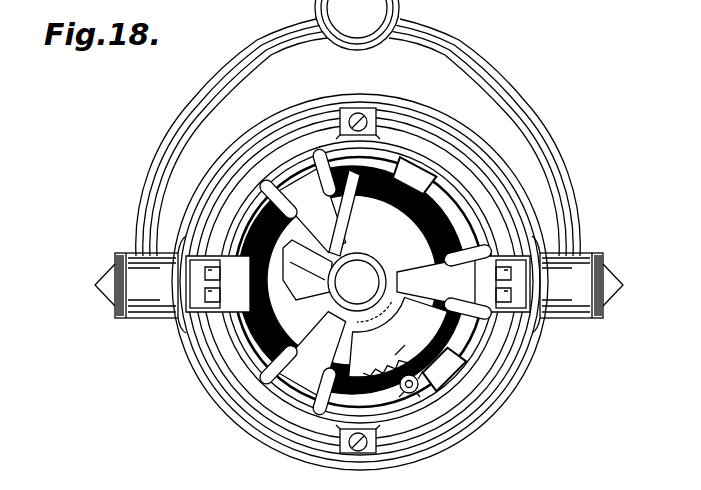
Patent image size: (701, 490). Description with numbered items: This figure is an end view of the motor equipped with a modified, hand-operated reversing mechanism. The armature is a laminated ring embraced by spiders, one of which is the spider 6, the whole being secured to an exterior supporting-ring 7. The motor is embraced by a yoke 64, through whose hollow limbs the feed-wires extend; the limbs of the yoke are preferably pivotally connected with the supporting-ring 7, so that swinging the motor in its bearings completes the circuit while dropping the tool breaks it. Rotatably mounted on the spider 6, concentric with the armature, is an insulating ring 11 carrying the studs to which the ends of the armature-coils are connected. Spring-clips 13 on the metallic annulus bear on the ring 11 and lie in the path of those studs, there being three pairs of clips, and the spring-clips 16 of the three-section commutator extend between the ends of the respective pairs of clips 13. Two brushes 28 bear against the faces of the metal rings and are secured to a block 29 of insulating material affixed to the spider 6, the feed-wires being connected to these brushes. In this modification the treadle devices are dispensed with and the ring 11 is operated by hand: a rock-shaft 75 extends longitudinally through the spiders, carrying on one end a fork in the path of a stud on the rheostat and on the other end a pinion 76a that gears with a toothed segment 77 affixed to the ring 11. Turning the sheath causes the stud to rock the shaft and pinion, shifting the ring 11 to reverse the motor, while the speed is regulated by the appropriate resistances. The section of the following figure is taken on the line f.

The spider 6 is at (352, 236).
The exterior supporting-ring 7 is at (505, 389).
The ring 11 is at (442, 228).
The spring-clips 13 is at (290, 165).
The spring-clips 16 is at (329, 345).
The brushes 28 is at (322, 249).
The block 29 is at (307, 283).
The yoke 64 is at (528, 128).
The rock-shaft 75 is at (432, 384).
The pinion 76a is at (396, 392).
The toothed segment 77 is at (416, 335).
The section line f is at (408, 365).